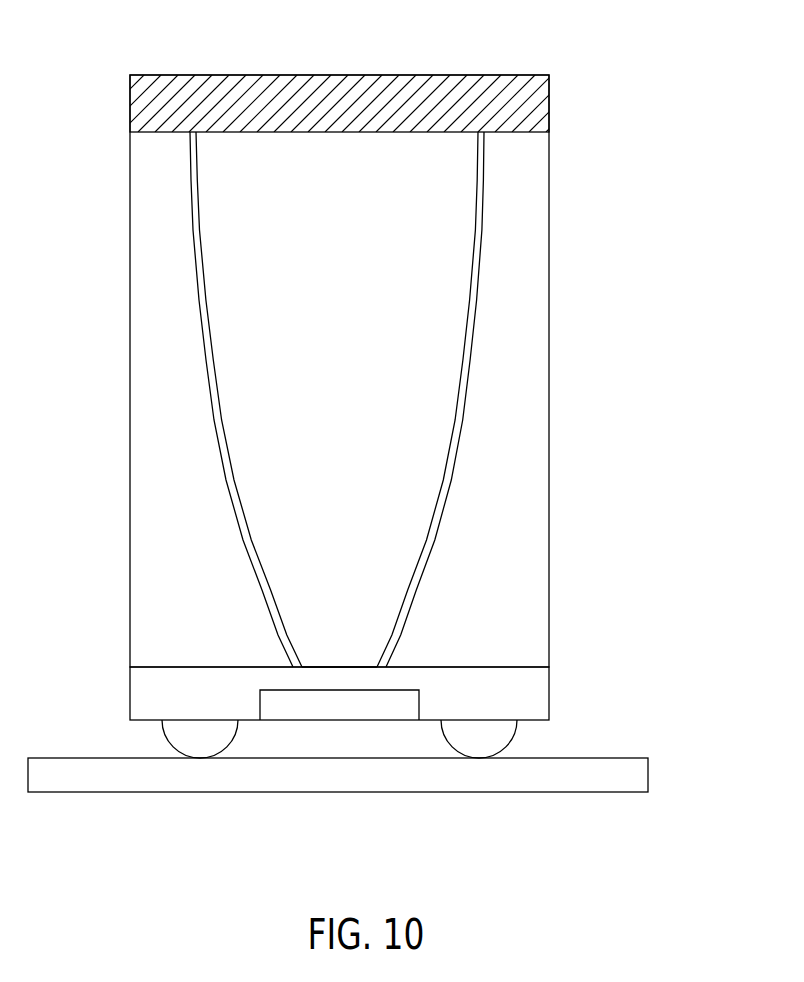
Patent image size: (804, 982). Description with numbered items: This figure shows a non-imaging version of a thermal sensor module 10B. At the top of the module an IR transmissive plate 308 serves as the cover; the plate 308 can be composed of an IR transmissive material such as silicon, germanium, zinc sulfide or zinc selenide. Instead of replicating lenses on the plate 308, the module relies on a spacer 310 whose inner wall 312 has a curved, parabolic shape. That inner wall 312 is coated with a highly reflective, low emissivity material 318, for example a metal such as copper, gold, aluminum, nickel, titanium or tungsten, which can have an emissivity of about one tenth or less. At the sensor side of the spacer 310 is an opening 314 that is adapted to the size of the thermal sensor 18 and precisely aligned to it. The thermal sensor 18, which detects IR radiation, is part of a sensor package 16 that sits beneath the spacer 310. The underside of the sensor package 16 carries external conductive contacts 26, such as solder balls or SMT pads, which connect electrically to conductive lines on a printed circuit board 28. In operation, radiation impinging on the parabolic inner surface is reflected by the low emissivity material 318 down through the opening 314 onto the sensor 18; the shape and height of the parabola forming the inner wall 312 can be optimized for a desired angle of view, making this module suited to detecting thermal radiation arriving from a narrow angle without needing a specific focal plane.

The sensor module 10B is at (594, 173).
The IR transmissive plate 308 is at (190, 90).
The spacer 310 is at (549, 340).
The inner wall 312 is at (199, 318).
The opening 314 is at (349, 662).
The low emissivity material 318 is at (212, 387).
The sensor package 16 is at (137, 699).
The thermal sensor 18 is at (335, 708).
The external conductive contacts 26 is at (207, 745).
The printed circuit board 28 is at (630, 793).